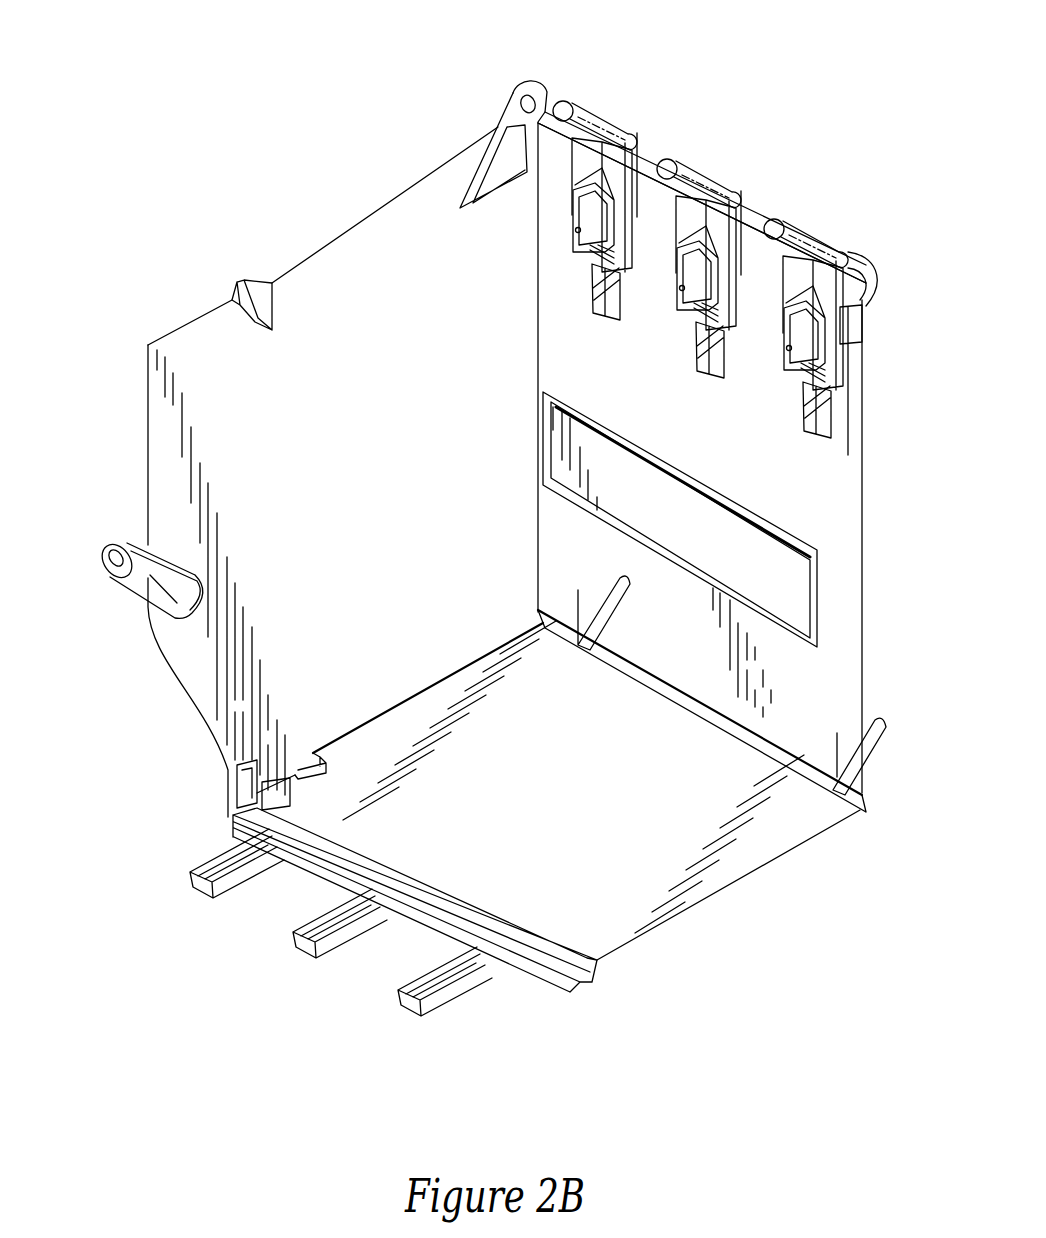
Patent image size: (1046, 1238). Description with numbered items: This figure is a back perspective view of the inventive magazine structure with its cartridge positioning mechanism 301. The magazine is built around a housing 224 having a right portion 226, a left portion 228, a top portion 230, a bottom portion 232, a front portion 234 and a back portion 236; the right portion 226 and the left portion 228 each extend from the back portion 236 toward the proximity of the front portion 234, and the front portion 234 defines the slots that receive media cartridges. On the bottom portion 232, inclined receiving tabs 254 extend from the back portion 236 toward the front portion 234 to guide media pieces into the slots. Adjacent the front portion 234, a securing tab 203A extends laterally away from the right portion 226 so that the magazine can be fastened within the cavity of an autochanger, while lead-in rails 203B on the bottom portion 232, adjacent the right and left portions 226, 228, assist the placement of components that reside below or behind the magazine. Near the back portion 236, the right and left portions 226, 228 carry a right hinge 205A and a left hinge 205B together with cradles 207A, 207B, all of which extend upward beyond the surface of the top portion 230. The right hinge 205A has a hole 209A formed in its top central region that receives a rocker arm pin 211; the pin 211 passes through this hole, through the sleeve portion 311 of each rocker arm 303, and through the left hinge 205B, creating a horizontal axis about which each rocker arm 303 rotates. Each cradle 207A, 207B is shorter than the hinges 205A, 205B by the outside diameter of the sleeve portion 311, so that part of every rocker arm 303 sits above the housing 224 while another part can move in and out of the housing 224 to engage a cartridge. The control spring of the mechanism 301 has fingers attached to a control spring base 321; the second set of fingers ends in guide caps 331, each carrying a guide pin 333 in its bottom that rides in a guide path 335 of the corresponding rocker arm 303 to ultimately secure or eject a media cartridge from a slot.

The housing 224 is at (234, 172).
The right portion 226 is at (170, 420).
The left portion 228 is at (867, 683).
The top portion 230 is at (353, 237).
The bottom portion 232 is at (690, 883).
The front portion 234 is at (205, 758).
The back portion 236 is at (850, 600).
The inclined receiving tabs 254 is at (425, 1018).
The securing tab 203A is at (142, 556).
The lead-in rails 203B is at (624, 582).
The right hinge 205A is at (520, 88).
The left hinge 205B is at (862, 272).
The right cradle 207A is at (658, 215).
The left cradle 207B is at (760, 272).
The hinge rod 209A is at (533, 102).
The rocker arm pin 211 is at (648, 205).
The cartridge positioning mechanism 301 is at (797, 57).
The rocker arm 303 is at (640, 110).
The sleeve portion 311 is at (607, 118).
The control spring base 321 is at (828, 334).
The guide cap 331 is at (612, 166).
The guide pin 333 is at (600, 248).
The guide path 335 is at (614, 318).